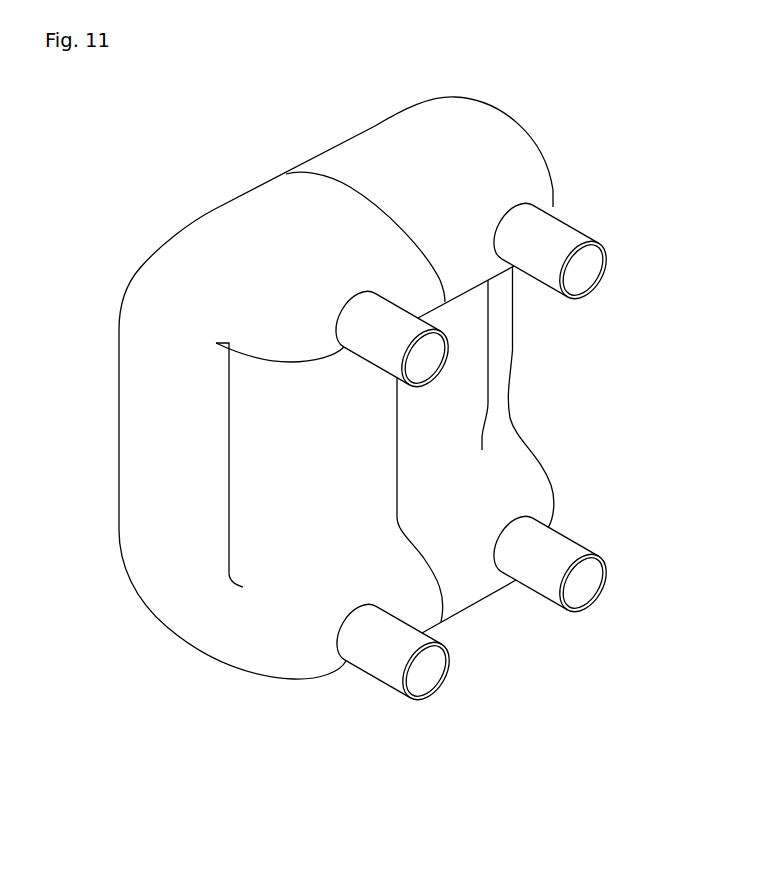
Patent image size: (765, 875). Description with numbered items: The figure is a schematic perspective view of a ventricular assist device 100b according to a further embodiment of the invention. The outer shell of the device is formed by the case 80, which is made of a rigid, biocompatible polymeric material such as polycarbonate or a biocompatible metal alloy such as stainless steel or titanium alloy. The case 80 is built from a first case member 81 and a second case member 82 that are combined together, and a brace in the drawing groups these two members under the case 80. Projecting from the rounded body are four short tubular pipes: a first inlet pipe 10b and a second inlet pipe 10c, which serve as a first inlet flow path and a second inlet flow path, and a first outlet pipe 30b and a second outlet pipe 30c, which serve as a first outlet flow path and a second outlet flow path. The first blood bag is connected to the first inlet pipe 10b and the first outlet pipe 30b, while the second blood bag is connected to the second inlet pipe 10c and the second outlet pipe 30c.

The ventricular assist device 100b is at (126, 184).
The case 80 is at (303, 61).
The first case member 81 is at (345, 159).
The second case member 82 is at (257, 207).
The first inlet pipe 10b is at (562, 233).
The second inlet pipe 10c is at (420, 327).
The first outlet pipe 30b is at (563, 548).
The second outlet pipe 30c is at (388, 672).